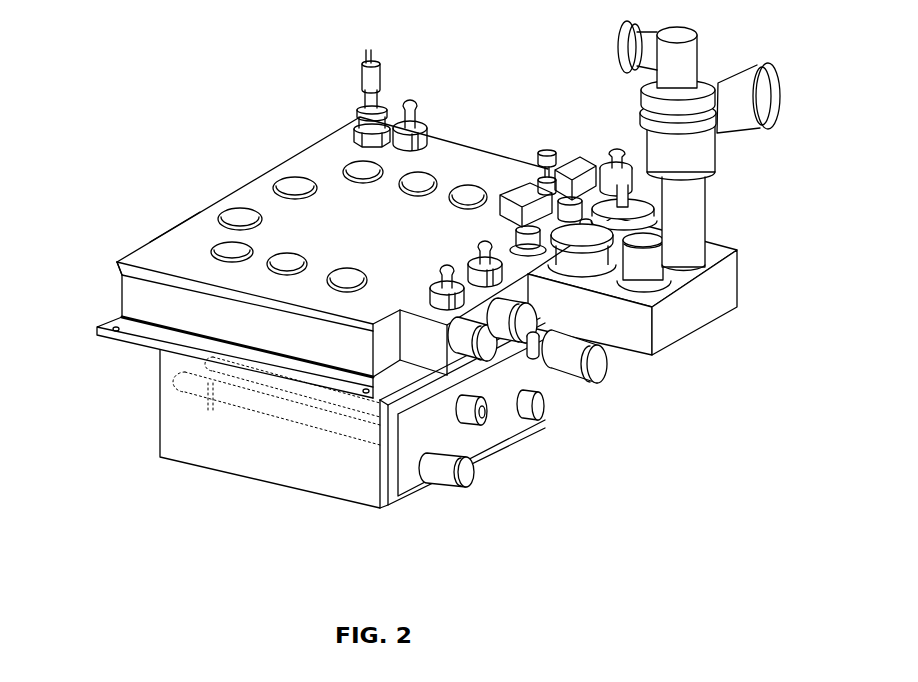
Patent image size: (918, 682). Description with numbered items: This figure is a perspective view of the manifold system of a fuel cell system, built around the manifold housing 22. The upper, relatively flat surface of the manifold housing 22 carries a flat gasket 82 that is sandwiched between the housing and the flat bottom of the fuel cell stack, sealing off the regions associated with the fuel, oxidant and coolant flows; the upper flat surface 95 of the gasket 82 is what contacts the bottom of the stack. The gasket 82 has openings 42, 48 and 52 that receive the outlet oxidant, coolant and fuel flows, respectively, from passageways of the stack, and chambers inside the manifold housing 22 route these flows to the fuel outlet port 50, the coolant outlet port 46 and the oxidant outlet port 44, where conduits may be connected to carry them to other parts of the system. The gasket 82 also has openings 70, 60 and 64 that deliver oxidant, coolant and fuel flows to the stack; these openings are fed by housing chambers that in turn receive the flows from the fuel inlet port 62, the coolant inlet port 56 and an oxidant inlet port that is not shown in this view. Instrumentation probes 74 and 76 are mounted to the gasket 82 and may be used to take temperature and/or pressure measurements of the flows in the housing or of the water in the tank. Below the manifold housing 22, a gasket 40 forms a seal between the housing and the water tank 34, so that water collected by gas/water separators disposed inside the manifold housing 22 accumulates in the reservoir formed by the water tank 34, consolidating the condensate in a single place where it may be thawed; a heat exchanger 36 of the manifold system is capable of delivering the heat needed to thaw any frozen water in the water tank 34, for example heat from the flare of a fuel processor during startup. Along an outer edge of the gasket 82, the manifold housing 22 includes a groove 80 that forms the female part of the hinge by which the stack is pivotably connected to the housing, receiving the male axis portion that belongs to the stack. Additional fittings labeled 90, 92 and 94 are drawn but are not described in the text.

The manifold housing 22 is at (132, 289).
The water tank 34 is at (245, 445).
The heat exchanger 36 is at (347, 432).
The gasket 40 is at (130, 334).
The opening 42 is at (336, 274).
The oxidant outlet port 44 is at (478, 360).
The coolant outlet port 46 is at (528, 333).
The opening 48 is at (278, 262).
The fuel outlet port 50 is at (655, 277).
The opening 52 is at (218, 255).
The coolant inlet port 56 is at (602, 372).
The opening 60 is at (430, 188).
The fuel inlet port 62 is at (695, 200).
The opening 64 is at (478, 201).
The opening 70 is at (358, 174).
The instrumentation probe 74 is at (382, 63).
The instrumentation probe 76 is at (415, 113).
The groove 80 is at (124, 250).
The flat gasket 82 is at (175, 226).
The connector 90 is at (540, 410).
The port 92 is at (226, 216).
The port 94 is at (280, 187).
The upper flat surface 95 is at (388, 240).